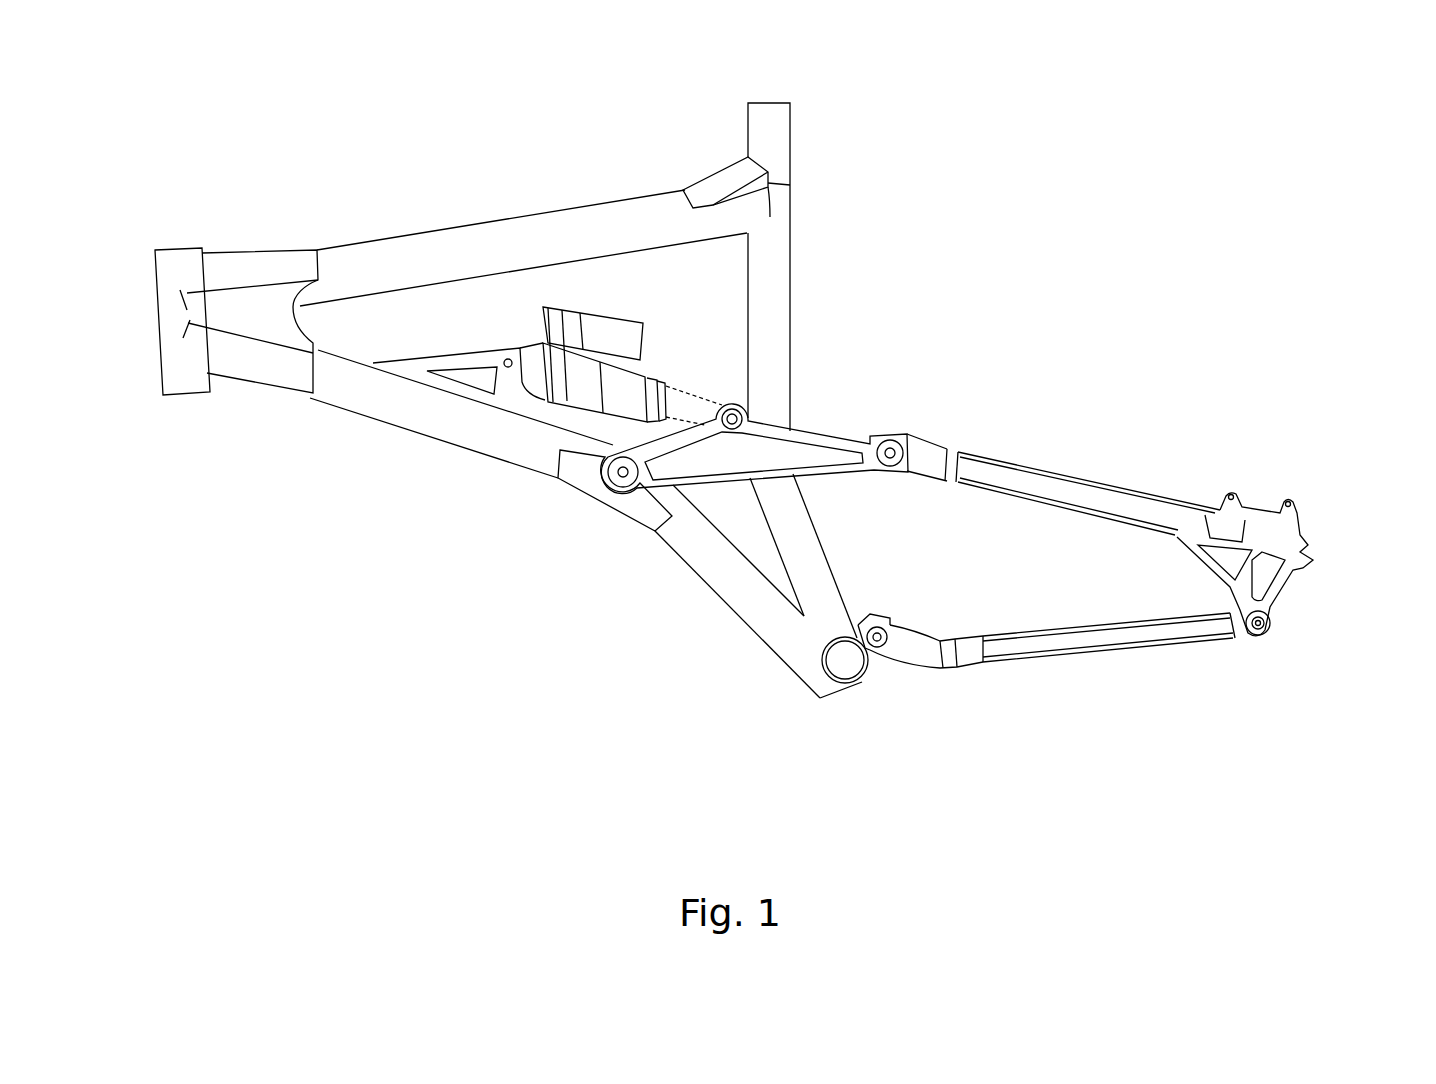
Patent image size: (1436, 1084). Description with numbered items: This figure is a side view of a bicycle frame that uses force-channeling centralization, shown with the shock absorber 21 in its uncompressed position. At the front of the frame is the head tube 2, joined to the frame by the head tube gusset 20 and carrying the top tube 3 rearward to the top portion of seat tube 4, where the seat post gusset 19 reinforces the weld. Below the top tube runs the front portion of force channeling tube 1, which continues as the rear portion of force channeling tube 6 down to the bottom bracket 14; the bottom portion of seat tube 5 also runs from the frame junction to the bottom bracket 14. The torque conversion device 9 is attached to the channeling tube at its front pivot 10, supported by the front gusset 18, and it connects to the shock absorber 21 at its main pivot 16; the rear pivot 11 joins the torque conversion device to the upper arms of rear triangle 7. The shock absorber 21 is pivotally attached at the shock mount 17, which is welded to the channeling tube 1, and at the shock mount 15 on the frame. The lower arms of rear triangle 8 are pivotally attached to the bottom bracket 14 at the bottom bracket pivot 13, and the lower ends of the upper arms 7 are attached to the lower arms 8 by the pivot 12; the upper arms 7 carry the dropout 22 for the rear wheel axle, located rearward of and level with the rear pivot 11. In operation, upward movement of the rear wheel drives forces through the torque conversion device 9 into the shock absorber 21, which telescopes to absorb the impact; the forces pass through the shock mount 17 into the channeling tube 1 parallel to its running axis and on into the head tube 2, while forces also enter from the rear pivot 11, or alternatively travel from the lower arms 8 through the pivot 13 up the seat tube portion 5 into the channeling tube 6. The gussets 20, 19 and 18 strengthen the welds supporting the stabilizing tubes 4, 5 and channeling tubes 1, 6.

The front portion of force channeling tube 1 is at (418, 418).
The head tube 2 is at (173, 272).
The top tube 3 is at (448, 257).
The top portion of seat tube 4 is at (775, 285).
The bottom portion of seat tube 5 is at (803, 563).
The rear portion of force channeling tube 6 is at (722, 577).
The upper arms of rear triangle 7 is at (1073, 495).
The lower arms of rear triangle 8 is at (1087, 647).
The torque conversion device 9 is at (785, 447).
The front pivot of torque conversion device 10 is at (612, 487).
The rear pivot of torque conversion device 11 is at (905, 432).
The pivot 12 is at (1258, 640).
The bottom bracket pivot 13 is at (880, 650).
The bottom bracket 14 is at (847, 663).
The shock mount 15 is at (508, 368).
The main pivot of torque conversion device 16 is at (740, 413).
The shock mount 17 is at (462, 365).
The front gusset of torque conversion device 18 is at (622, 503).
The seat post gusset 19 is at (730, 175).
The head tube gusset 20 is at (247, 308).
The shock absorber 21 is at (580, 387).
The dropout 22 is at (1313, 550).